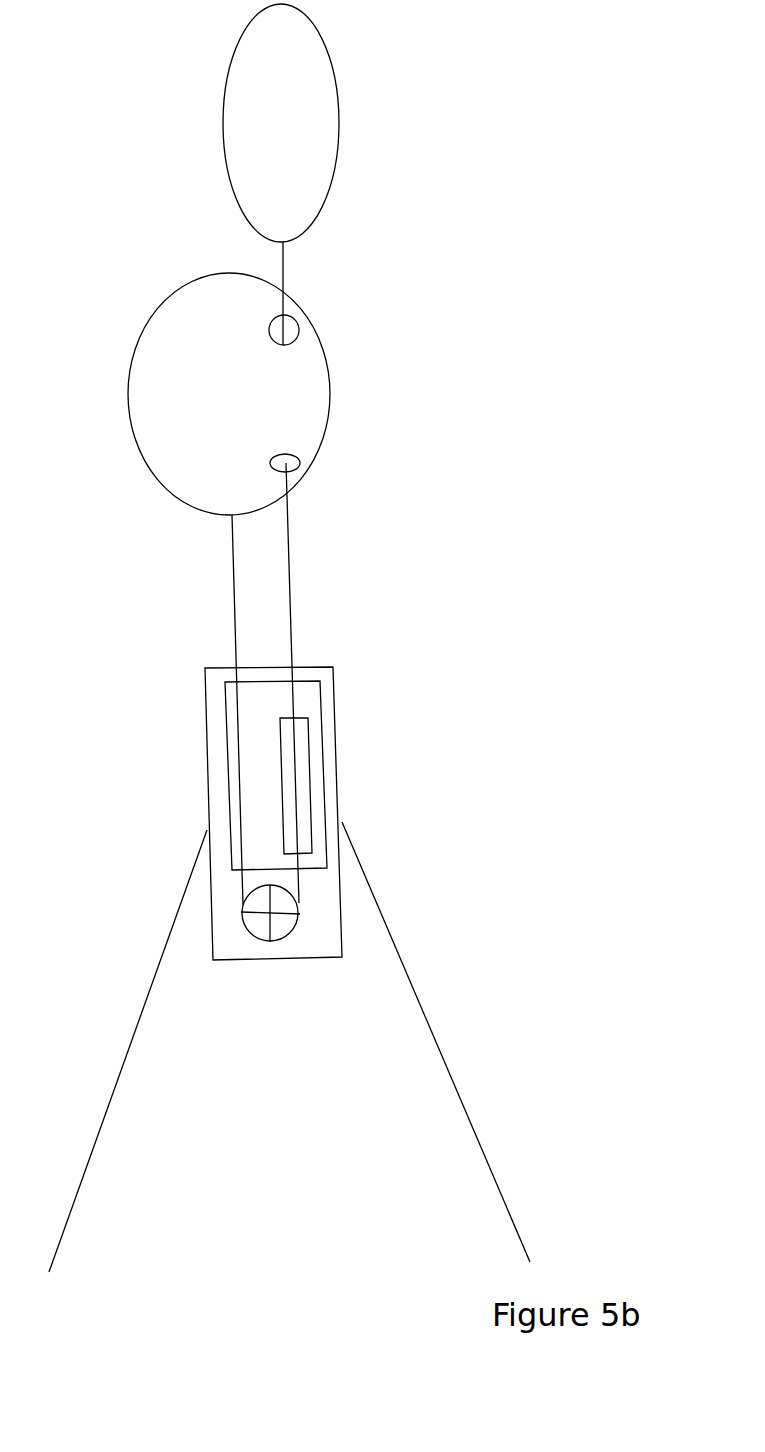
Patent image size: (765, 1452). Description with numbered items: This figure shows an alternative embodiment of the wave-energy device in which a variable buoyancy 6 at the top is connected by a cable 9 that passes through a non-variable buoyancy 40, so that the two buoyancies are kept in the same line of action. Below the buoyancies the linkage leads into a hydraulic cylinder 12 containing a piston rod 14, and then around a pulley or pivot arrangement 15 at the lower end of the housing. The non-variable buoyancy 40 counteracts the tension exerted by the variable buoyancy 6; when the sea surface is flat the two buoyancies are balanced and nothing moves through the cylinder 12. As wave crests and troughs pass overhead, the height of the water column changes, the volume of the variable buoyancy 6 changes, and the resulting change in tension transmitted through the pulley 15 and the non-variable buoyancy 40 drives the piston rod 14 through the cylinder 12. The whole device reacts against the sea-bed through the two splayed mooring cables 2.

The variable buoyancy 6 is at (338, 113).
The cable 9 is at (284, 277).
The non-variable buoyancy 40 is at (330, 398).
The hydraulic cylinder 12 is at (308, 748).
The piston rod 14 is at (296, 803).
The pulley or pivot arrangement 15 is at (300, 913).
The mooring cables 2 is at (460, 1078).